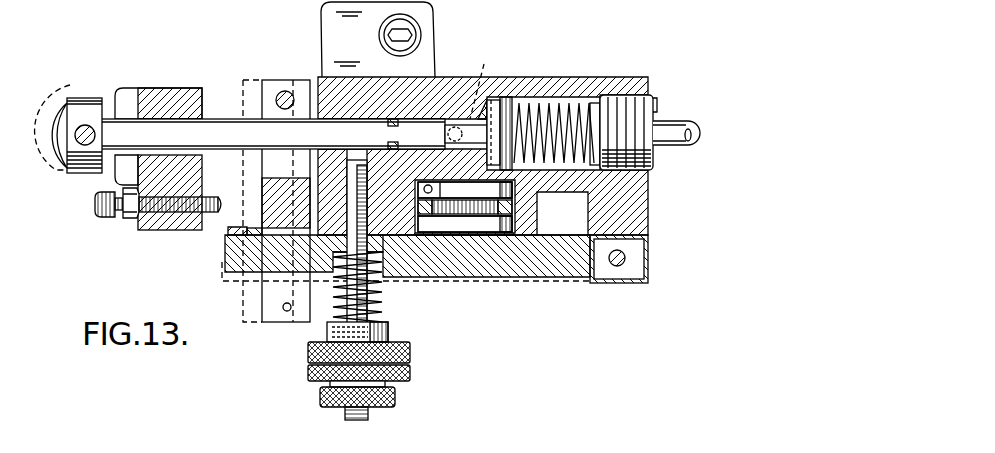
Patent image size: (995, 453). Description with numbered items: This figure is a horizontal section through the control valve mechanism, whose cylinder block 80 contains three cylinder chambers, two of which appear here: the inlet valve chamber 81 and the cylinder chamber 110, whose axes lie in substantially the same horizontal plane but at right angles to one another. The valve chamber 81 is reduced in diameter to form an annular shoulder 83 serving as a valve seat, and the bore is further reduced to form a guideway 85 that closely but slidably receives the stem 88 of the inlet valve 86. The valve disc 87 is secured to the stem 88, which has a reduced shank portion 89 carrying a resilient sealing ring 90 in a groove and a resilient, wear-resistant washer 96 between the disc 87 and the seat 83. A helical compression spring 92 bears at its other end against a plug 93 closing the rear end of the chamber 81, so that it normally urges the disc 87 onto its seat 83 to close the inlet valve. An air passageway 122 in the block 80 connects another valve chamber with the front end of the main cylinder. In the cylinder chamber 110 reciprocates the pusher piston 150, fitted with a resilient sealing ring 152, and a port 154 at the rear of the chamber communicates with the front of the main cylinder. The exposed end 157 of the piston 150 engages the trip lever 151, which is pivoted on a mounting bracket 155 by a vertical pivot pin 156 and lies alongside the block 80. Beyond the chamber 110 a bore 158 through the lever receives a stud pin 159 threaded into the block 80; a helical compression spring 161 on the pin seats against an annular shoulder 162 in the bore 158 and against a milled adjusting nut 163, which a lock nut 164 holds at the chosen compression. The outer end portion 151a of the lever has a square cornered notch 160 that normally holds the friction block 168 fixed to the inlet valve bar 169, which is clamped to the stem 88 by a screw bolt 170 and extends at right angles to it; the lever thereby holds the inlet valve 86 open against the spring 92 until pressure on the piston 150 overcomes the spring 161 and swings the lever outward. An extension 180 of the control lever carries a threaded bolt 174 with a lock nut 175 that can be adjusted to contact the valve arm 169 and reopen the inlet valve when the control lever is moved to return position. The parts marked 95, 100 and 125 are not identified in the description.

The cylinder block 80 is at (463, 66).
The valve chamber 81 is at (591, 115).
The annular shoulder 83 is at (490, 100).
The guideway 85 is at (352, 119).
The inlet valve 86 is at (566, 103).
The valve disc 87 is at (513, 166).
The valve stem 88 is at (219, 125).
The reduced shank portion 89 is at (462, 144).
The resilient sealing ring 90 is at (393, 119).
The helical compression spring 92 is at (606, 96).
The plug 93 is at (161, 119).
The hand knob 95 is at (83, 105).
The washer 96 is at (524, 103).
The pin 100 is at (487, 83).
The cylinder chamber 110 is at (513, 222).
The air passageway 122 is at (386, 35).
The stub shaft 125 is at (682, 147).
The pusher piston 150 is at (465, 226).
The trip lever 151 is at (548, 265).
The outer end portion 151a is at (230, 270).
The resilient sealing ring 152 is at (514, 203).
The port 154 is at (427, 185).
The mounting bracket 155 is at (649, 255).
The pivot pin 156 is at (618, 268).
The exposed end 157 is at (487, 236).
The bore 158 is at (387, 240).
The stud pin 159 is at (372, 305).
The square cornered notch 160 is at (241, 239).
The helical compression spring 161 is at (336, 302).
The annular shoulder 162 is at (380, 276).
The milled nut 163 is at (410, 352).
The lock nut 164 is at (396, 398).
The friction block 168 is at (278, 229).
The inlet valve bar 169 is at (265, 80).
The screw bolt 170 is at (284, 92).
The threaded bolt 174 is at (165, 213).
The lock nut 175 is at (128, 222).
The extension 180 is at (199, 230).